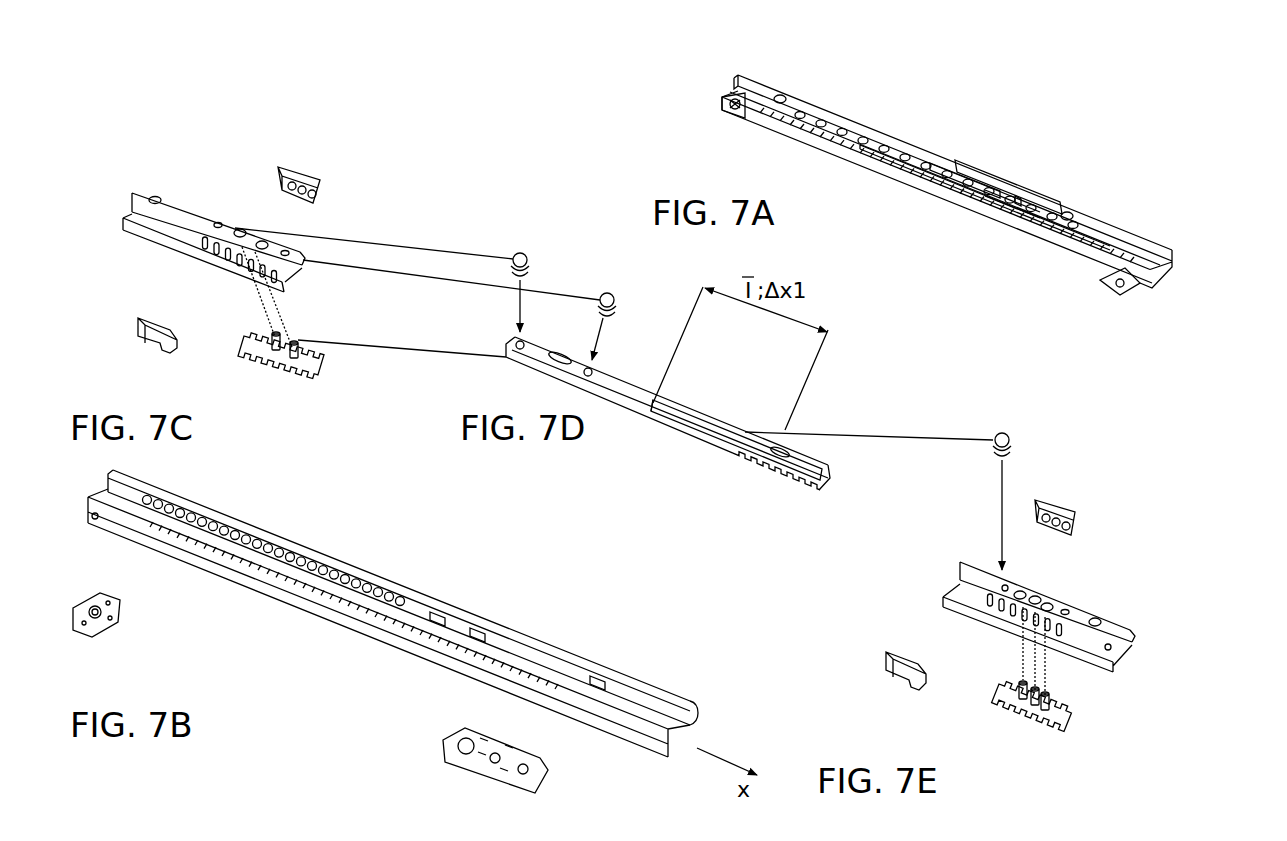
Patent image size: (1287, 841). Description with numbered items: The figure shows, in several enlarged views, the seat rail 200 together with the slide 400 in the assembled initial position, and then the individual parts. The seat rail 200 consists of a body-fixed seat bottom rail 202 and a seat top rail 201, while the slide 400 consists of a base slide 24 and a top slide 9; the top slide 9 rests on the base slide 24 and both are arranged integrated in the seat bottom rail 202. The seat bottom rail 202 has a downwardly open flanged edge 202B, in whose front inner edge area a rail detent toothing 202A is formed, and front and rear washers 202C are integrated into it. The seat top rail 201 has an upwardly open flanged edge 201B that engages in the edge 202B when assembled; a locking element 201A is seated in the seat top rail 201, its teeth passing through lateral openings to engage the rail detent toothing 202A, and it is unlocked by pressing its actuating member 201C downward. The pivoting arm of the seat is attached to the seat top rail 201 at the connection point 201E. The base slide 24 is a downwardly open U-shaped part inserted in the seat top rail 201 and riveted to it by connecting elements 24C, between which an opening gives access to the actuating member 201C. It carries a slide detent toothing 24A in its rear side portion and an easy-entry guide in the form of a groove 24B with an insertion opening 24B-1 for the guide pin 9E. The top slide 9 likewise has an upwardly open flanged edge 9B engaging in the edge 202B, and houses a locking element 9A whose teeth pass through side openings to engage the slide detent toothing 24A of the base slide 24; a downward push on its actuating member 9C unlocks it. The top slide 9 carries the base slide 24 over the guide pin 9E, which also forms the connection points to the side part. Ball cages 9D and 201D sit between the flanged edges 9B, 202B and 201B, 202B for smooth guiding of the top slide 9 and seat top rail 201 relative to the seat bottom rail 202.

In FIG. 7A, the seat rail 200 is at (1176, 284).
In FIG. 7A, the seat top rail 201 is at (810, 112).
In FIG. 7C, the seat top rail 201 is at (203, 220).
In FIG. 7C, the locking element 201A is at (317, 363).
In FIG. 7C, the flanged edge 201B is at (195, 247).
In FIG. 7A, the actuating member 201C is at (855, 127).
In FIG. 7C, the actuating member 201C is at (283, 353).
In FIG. 7C, the ball cage 201D is at (302, 173).
In FIG. 7A, the connection point 201E is at (780, 100).
In FIG. 7C, the connection point 201E is at (157, 198).
In FIG. 7A, the seat bottom rail 202 is at (1142, 242).
In FIG. 7B, the seat bottom rail 202 is at (530, 633).
In FIG. 7B, the rail detent toothing 202A is at (367, 587).
In FIG. 7B, the flanged edge 202B is at (442, 618).
In FIG. 7A, the washers 202C is at (742, 118).
In FIG. 7B, the washers 202C is at (110, 618).
In FIG. 7A, the base slide 24 is at (903, 153).
In FIG. 7D, the base slide 24 is at (630, 392).
In FIG. 7D, the slide detent toothing 24A is at (778, 472).
In FIG. 7A, the groove 24B is at (938, 170).
In FIG. 7D, the groove 24B is at (690, 415).
In FIG. 7D, the insertion opening 24B-1 is at (773, 450).
In FIG. 7D, the connecting elements 24C is at (522, 250).
In FIG. 7A, the top slide 9 is at (973, 178).
In FIG. 7E, the top slide 9 is at (1072, 612).
In FIG. 7A, the locking element 9A is at (1000, 187).
In FIG. 7E, the locking element 9A is at (1068, 712).
In FIG. 7E, the flanged edge 9B is at (1105, 660).
In FIG. 7A, the actuating member 9C is at (1020, 202).
In FIG. 7E, the actuating member 9C is at (1033, 708).
In FIG. 7E, the ball cage 9D is at (1062, 505).
In FIG. 7A, the guide pin 9E is at (1067, 217).
In FIG. 7E, the guide pin 9E is at (1002, 430).
In FIG. 7A, the slide 400 is at (960, 137).